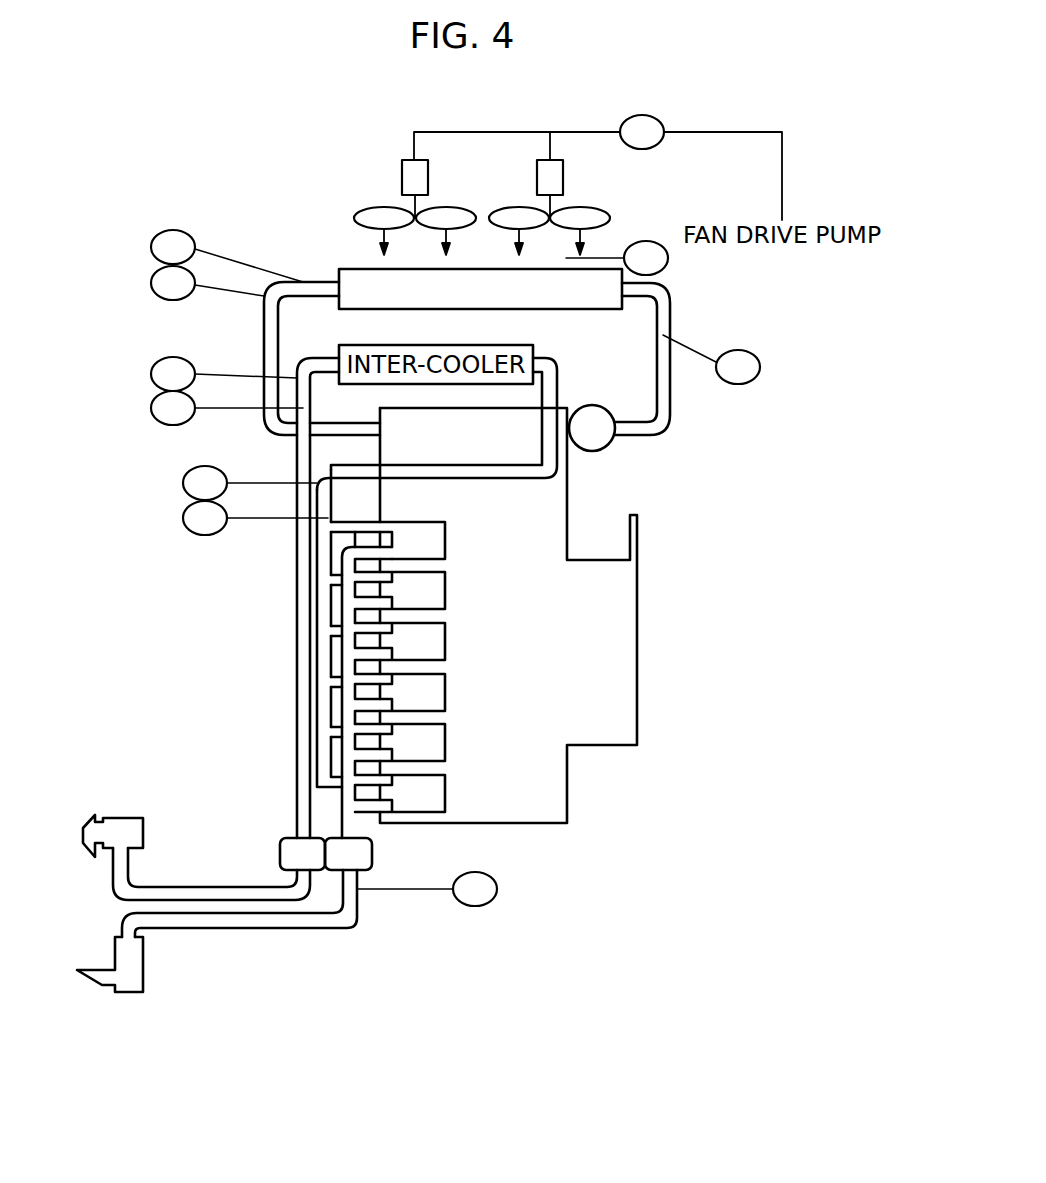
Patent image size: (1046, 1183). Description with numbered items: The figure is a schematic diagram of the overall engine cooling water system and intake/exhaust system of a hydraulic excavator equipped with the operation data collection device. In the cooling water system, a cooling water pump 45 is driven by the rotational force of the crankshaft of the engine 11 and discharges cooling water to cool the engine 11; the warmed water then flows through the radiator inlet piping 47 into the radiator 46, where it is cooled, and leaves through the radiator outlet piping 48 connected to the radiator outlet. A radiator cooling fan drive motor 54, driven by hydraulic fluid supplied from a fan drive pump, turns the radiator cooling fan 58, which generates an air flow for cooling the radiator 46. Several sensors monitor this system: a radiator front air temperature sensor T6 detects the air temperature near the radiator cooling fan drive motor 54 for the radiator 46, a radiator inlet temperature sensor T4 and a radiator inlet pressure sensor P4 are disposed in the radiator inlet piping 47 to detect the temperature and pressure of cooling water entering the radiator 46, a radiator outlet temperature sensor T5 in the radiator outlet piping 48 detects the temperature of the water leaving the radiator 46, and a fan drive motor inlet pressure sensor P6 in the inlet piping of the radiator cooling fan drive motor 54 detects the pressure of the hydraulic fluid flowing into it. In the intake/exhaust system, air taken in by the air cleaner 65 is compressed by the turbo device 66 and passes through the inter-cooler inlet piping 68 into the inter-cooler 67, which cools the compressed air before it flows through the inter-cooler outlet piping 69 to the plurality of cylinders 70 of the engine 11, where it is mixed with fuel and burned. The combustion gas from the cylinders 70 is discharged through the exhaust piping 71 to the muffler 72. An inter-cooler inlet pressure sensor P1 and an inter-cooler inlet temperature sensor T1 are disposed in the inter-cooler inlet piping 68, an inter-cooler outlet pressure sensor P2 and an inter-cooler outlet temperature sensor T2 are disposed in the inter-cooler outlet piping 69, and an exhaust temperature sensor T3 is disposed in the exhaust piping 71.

The engine 11 is at (620, 655).
The cooling water pump 45 is at (598, 438).
The radiator 46 is at (339, 270).
The radiator inlet piping 47 is at (263, 336).
The radiator outlet piping 48 is at (672, 305).
The radiator cooling fan drive motor 54 is at (402, 178).
The radiator cooling fan 58 is at (355, 218).
The air cleaner 65 is at (95, 815).
The turbo device 66 is at (280, 853).
The inter-cooler 67 is at (533, 347).
The inter-cooler inlet piping 68 is at (297, 620).
The inter-cooler outlet piping 69 is at (325, 710).
The cylinders 70 is at (445, 642).
The exhaust piping 71 is at (262, 930).
The muffler 72 is at (102, 985).
The inter-cooler inlet temperature sensor T1 is at (224, 374).
The inter-cooler outlet temperature sensor T2 is at (250, 483).
The exhaust temperature sensor T3 is at (427, 889).
The radiator inlet temperature sensor T4 is at (227, 256).
The radiator outlet temperature sensor T5 is at (711, 359).
The radiator front air temperature sensor T6 is at (617, 258).
The inter-cooler inlet pressure sensor P1 is at (227, 408).
The inter-cooler outlet pressure sensor P2 is at (255, 518).
The radiator inlet pressure sensor P4 is at (207, 283).
The fan drive motor inlet pressure sensor P6 is at (598, 167).